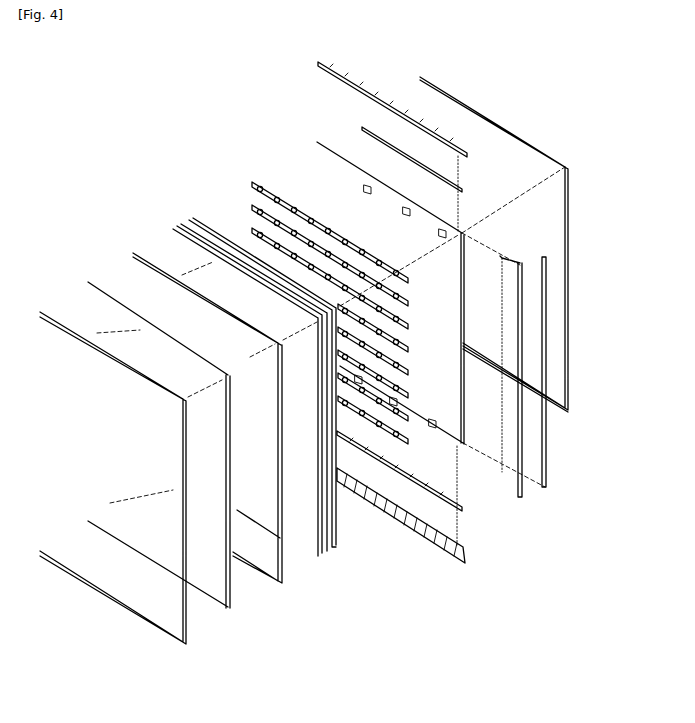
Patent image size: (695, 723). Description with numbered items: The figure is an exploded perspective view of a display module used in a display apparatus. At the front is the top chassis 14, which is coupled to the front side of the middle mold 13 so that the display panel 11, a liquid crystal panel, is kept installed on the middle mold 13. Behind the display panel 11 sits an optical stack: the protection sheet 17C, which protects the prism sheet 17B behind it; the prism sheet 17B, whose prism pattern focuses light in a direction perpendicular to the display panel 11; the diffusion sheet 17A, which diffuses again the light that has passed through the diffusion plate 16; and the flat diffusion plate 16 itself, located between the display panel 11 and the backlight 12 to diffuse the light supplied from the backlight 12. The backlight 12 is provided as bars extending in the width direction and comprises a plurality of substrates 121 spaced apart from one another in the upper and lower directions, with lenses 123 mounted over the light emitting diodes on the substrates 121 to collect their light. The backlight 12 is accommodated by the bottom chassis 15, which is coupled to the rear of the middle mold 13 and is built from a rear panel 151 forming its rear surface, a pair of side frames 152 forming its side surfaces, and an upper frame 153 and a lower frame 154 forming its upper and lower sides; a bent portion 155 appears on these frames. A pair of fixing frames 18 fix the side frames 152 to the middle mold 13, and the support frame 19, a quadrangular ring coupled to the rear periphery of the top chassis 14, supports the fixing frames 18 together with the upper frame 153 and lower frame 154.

The display panel 11 is at (224, 604).
The backlight 12 is at (354, 281).
The substrates 121 is at (410, 284).
The lenses 123 is at (265, 183).
The middle mold 13 is at (277, 583).
The top chassis 14 is at (172, 636).
The bottom chassis 15 is at (432, 328).
The rear panel 151 is at (457, 443).
The side frames 152 is at (513, 473).
The upper frame 153 is at (387, 103).
The lower frame 154 is at (438, 552).
The bent portion 155 is at (455, 180).
The diffusion plate 16 is at (337, 537).
The diffusion sheet 17A is at (324, 557).
The prism sheet 17B is at (321, 561).
The protection sheet 17C is at (309, 559).
The fixing frames 18 is at (547, 426).
The support frame 19 is at (569, 222).